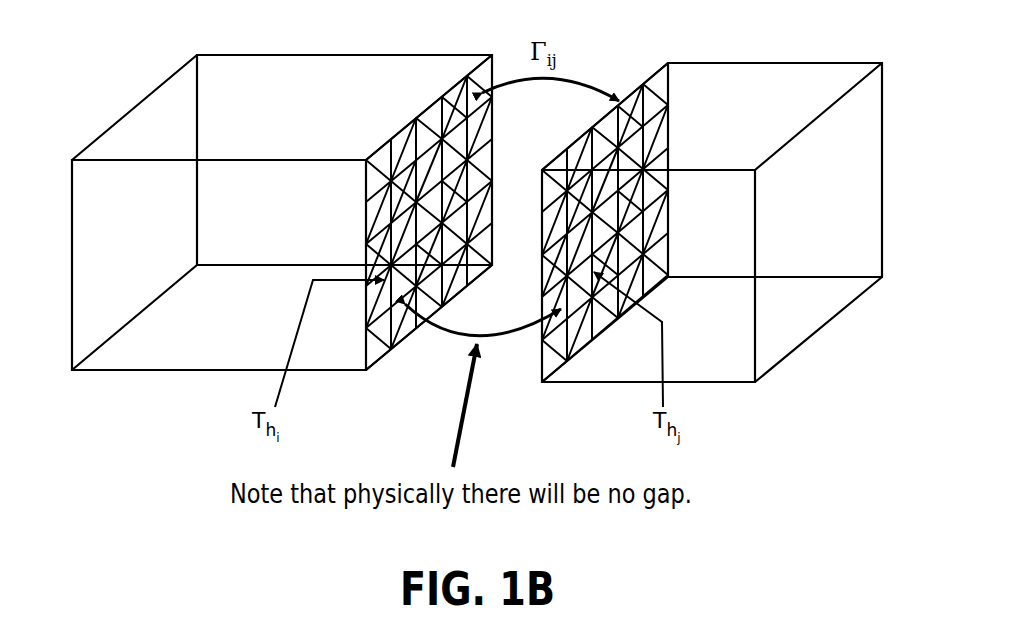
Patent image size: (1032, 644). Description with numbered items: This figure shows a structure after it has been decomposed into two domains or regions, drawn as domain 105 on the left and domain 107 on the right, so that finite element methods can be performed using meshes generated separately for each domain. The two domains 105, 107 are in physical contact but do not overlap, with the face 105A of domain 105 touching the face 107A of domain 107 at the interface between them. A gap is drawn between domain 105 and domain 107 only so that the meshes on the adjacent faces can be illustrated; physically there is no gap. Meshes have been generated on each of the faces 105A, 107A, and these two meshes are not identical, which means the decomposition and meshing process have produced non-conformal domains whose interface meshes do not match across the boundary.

The domain 105 is at (138, 385).
The face 105A is at (388, 358).
The domain 107 is at (744, 394).
The face 107A is at (538, 373).